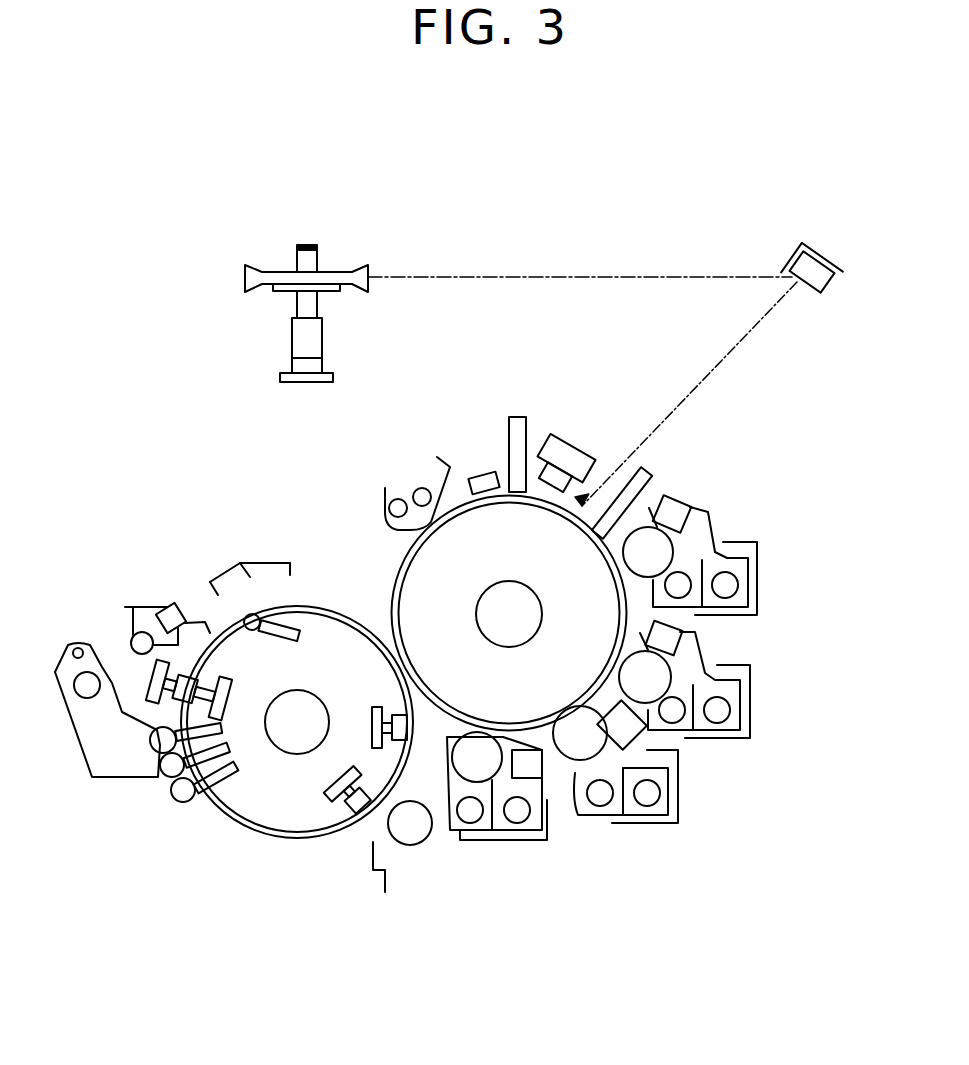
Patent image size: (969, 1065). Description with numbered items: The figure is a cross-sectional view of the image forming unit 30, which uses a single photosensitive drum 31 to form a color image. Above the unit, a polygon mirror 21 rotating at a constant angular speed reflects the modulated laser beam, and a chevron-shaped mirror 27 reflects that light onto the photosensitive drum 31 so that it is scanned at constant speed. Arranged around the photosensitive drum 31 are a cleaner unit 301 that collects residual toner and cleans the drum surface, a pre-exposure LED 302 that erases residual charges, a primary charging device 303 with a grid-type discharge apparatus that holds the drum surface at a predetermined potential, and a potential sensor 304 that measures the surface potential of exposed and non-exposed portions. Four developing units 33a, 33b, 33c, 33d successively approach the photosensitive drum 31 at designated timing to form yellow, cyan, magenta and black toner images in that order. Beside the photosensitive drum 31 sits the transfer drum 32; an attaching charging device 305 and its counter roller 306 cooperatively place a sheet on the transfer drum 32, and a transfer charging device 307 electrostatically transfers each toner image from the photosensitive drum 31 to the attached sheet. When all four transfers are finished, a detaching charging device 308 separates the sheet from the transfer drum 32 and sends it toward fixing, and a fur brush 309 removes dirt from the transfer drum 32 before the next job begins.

The polygon mirror 21 is at (353, 266).
The chevron-shaped mirror 27 is at (828, 256).
The image forming unit 30 is at (806, 929).
The photosensitive drum 31 is at (406, 545).
The transfer drum 32 is at (218, 818).
The developing unit 33a is at (710, 512).
The developing unit 33b is at (713, 735).
The developing unit 33c is at (600, 820).
The developing unit 33d is at (478, 835).
The cleaner unit 301 is at (388, 492).
The pre-exposure LED 302 is at (518, 412).
The primary charging device 303 is at (572, 448).
The potential sensor 304 is at (655, 475).
The attaching charging device 305 is at (335, 815).
The counter roller 306 is at (420, 845).
The transfer charging device 307 is at (358, 620).
The detaching charging device 308 is at (237, 562).
The fur brush 309 is at (165, 790).